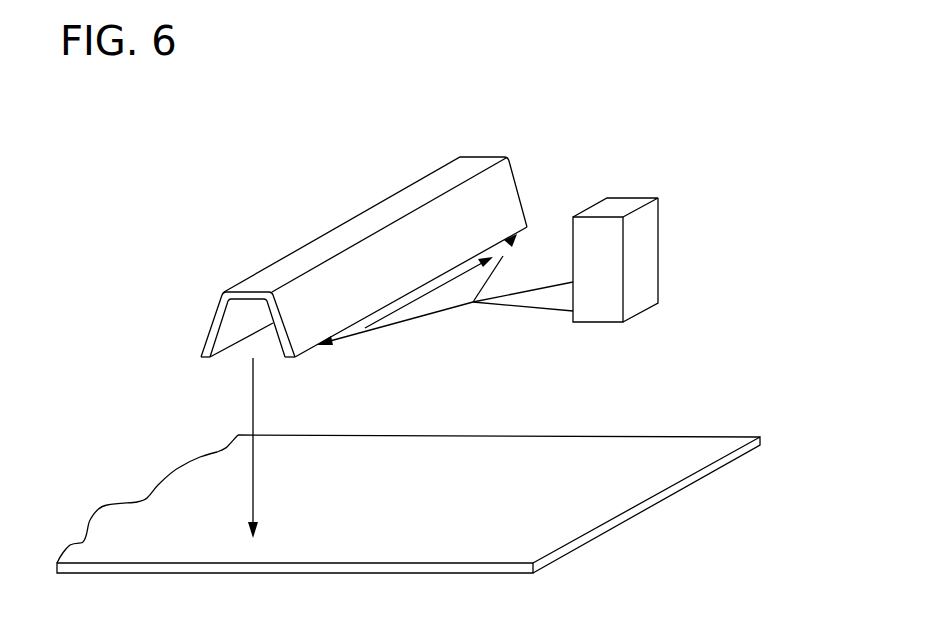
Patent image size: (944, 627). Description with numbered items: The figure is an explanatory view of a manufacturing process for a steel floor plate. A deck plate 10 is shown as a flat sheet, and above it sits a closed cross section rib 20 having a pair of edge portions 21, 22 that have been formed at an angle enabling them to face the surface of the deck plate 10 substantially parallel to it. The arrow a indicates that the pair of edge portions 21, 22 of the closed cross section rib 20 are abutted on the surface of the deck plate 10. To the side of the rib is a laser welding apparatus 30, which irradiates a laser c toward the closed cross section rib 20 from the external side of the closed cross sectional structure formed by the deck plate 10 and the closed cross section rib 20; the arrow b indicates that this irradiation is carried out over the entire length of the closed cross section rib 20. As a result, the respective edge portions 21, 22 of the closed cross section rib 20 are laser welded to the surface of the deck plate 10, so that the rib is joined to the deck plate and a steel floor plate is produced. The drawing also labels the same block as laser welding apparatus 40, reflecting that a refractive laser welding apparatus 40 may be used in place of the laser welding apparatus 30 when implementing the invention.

The deck plate 10 is at (558, 462).
The closed cross section rib 20 is at (326, 210).
The edge portion 21 is at (290, 360).
The edge portion 22 is at (205, 357).
The laser welding apparatus 30 is at (669, 260).
The laser welding apparatus 40 is at (642, 258).
The arrow a is at (253, 408).
The arrow b is at (432, 292).
The laser c is at (545, 307).